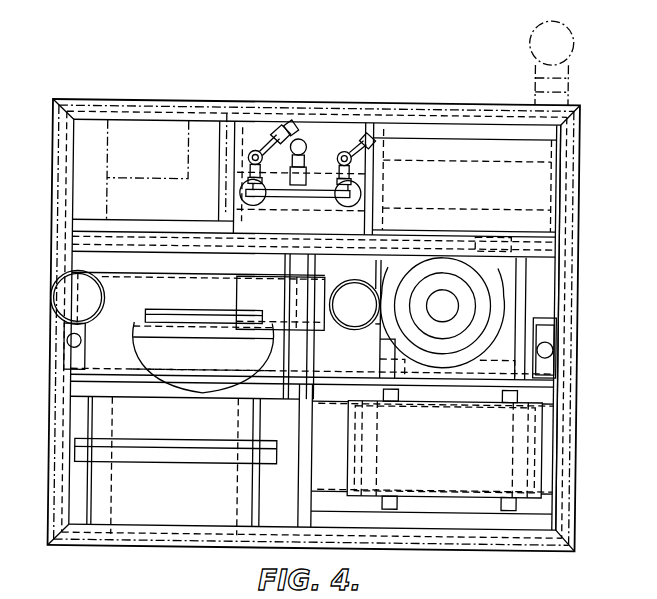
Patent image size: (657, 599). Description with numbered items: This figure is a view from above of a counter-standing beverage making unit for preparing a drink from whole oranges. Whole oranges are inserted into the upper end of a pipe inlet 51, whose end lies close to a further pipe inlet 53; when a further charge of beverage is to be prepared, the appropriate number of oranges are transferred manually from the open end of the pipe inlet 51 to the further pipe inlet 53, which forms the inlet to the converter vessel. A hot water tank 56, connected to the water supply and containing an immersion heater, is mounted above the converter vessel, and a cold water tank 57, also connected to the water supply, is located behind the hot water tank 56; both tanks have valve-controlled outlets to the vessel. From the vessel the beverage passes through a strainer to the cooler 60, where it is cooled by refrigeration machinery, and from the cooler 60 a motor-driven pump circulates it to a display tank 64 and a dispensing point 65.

The pipe inlet 51 is at (62, 296).
The further pipe inlet 53 is at (354, 317).
The hot water tank 56 is at (549, 415).
The cold water tank 57 is at (549, 168).
The cooler 60 is at (123, 429).
The display tank 64 is at (145, 350).
The dispensing point 65 is at (308, 161).